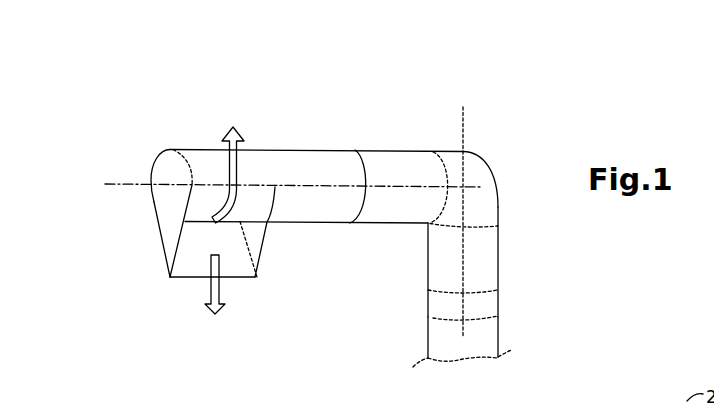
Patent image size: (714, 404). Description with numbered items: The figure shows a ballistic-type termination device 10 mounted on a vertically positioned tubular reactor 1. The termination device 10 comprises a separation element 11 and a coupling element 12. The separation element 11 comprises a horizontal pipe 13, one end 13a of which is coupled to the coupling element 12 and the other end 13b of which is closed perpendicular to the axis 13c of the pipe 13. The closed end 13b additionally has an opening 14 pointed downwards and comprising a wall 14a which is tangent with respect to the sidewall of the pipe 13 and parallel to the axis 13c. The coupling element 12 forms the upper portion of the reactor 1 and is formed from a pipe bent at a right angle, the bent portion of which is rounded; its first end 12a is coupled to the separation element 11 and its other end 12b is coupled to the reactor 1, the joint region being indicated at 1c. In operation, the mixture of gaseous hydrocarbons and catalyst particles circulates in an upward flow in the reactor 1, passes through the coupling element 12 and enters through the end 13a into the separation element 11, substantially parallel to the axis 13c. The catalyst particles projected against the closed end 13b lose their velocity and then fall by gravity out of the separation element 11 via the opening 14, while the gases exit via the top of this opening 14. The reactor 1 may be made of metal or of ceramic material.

The tubular reactor 1 is at (438, 318).
The joint of pipe 1c is at (500, 317).
The termination device 10 is at (291, 336).
The separation element 11 is at (273, 113).
The coupling element 12 is at (507, 176).
The first end 12a is at (400, 157).
The other end 12b is at (490, 267).
The horizontal pipe 13 is at (308, 158).
The end 13a is at (363, 179).
The closed end 13b is at (166, 170).
The axis 13c is at (126, 187).
The opening 14 is at (191, 252).
The wall 14a is at (236, 257).